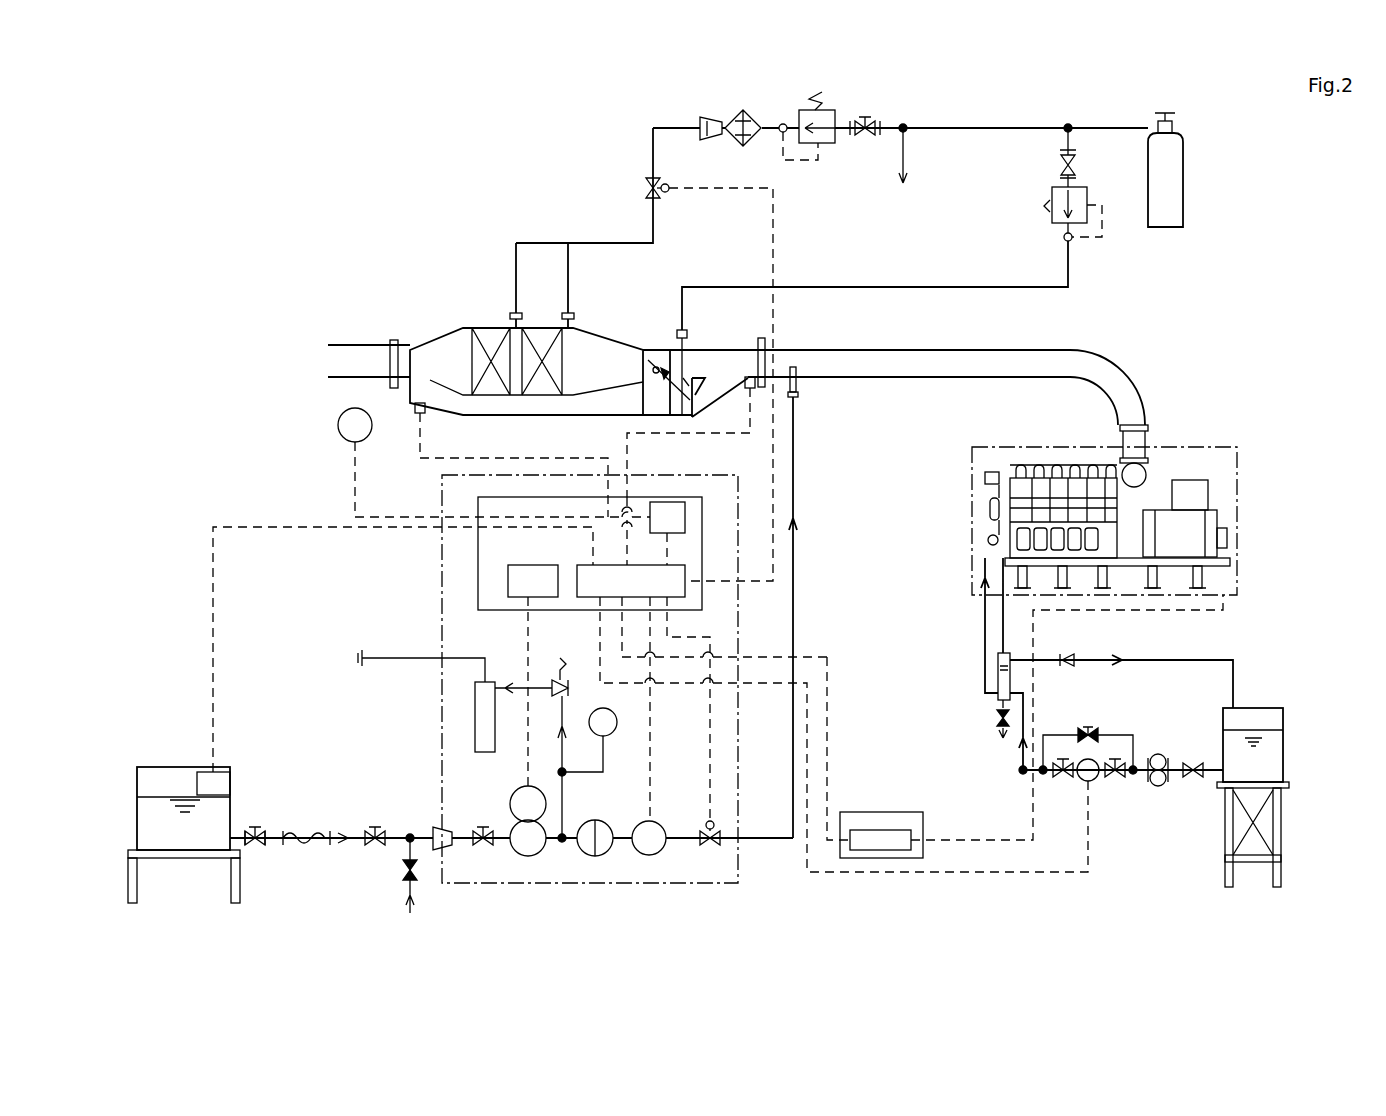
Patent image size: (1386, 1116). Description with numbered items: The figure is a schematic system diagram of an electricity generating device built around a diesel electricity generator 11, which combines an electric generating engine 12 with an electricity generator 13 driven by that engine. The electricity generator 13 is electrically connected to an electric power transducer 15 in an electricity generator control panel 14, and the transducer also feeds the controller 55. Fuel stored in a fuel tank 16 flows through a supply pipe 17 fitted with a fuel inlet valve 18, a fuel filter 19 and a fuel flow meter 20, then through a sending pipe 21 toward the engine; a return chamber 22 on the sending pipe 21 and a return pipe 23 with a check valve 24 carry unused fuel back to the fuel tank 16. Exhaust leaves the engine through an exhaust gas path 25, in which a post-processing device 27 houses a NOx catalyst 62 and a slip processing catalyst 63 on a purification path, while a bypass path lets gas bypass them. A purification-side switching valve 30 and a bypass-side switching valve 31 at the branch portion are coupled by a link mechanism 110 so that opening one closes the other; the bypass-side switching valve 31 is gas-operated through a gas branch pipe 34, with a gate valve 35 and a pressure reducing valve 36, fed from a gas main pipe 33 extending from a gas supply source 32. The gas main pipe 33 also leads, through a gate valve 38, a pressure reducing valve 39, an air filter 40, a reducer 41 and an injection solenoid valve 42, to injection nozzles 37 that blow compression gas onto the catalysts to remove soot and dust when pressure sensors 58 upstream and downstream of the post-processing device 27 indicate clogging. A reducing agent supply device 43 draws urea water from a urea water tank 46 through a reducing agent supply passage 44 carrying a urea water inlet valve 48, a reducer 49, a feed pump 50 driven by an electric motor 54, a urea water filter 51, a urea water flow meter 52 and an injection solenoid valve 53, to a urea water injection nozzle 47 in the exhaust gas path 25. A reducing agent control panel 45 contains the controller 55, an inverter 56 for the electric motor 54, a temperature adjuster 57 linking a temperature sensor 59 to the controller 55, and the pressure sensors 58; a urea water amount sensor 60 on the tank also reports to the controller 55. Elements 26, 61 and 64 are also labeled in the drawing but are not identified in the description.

The diesel electricity generator 11 is at (1104, 501).
The electric generating engine 12 is at (1088, 478).
The electricity generator 13 is at (1172, 515).
The electricity generator control panel 14 is at (1025, 749).
The electric power transducer 15 is at (900, 850).
The fuel tank 16 is at (1228, 712).
The supply pipe 17 is at (1025, 778).
The fuel inlet valve 18 is at (1193, 778).
The fuel filter 19 is at (1157, 786).
The fuel flow meter 20 is at (1097, 780).
The sending pipe 21 is at (985, 655).
The return chamber 22 is at (998, 686).
The return pipe 23 is at (1147, 661).
The check valve 24 is at (1070, 663).
The exhaust gas path 25 is at (1148, 410).
The exhaust pipe 26 is at (865, 355).
The post-processing device 27 is at (485, 347).
The purification-side switching valve 30 is at (657, 366).
The bypass-side switching valve 31 is at (700, 392).
The gas supply source 32 is at (1160, 188).
The gas main pipe 33 is at (1108, 132).
The gas branch pipe 34 is at (1030, 287).
The gate valve 35 is at (1060, 165).
The pressure reducing valve 36 is at (1058, 220).
The injection nozzles 37 is at (572, 313).
The gate valve 38 is at (868, 137).
The pressure reducing valve 39 is at (829, 145).
The air filter 40 is at (753, 147).
The reducer 41 is at (708, 141).
The injection solenoid valve 42 is at (644, 188).
The reducing agent supply device 43 is at (440, 580).
The reducing agent supply passage 44 is at (795, 548).
The reducing agent control panel 45 is at (520, 658).
The urea water tank 46 is at (190, 820).
The urea water injection nozzle 47 is at (796, 392).
The urea water inlet valve 48 is at (257, 848).
The reducer 49 is at (433, 827).
The feed pump 50 is at (535, 852).
The urea water filter 51 is at (605, 852).
The urea water flow meter 52 is at (658, 852).
The injection solenoid valve 53 is at (718, 845).
The electric motor 54 is at (512, 797).
The controller 55 is at (620, 565).
The inverter 56 is at (530, 565).
The temperature adjuster 57 is at (682, 502).
The pressure sensors 58 is at (750, 377).
The temperature sensor 59 is at (338, 426).
The urea water amount sensor 60 is at (224, 772).
The casing 61 is at (535, 416).
The NOx catalyst 62 is at (540, 330).
The slip processing catalyst 63 is at (488, 328).
The inlet 64 is at (417, 352).
The link mechanism 110 is at (672, 388).